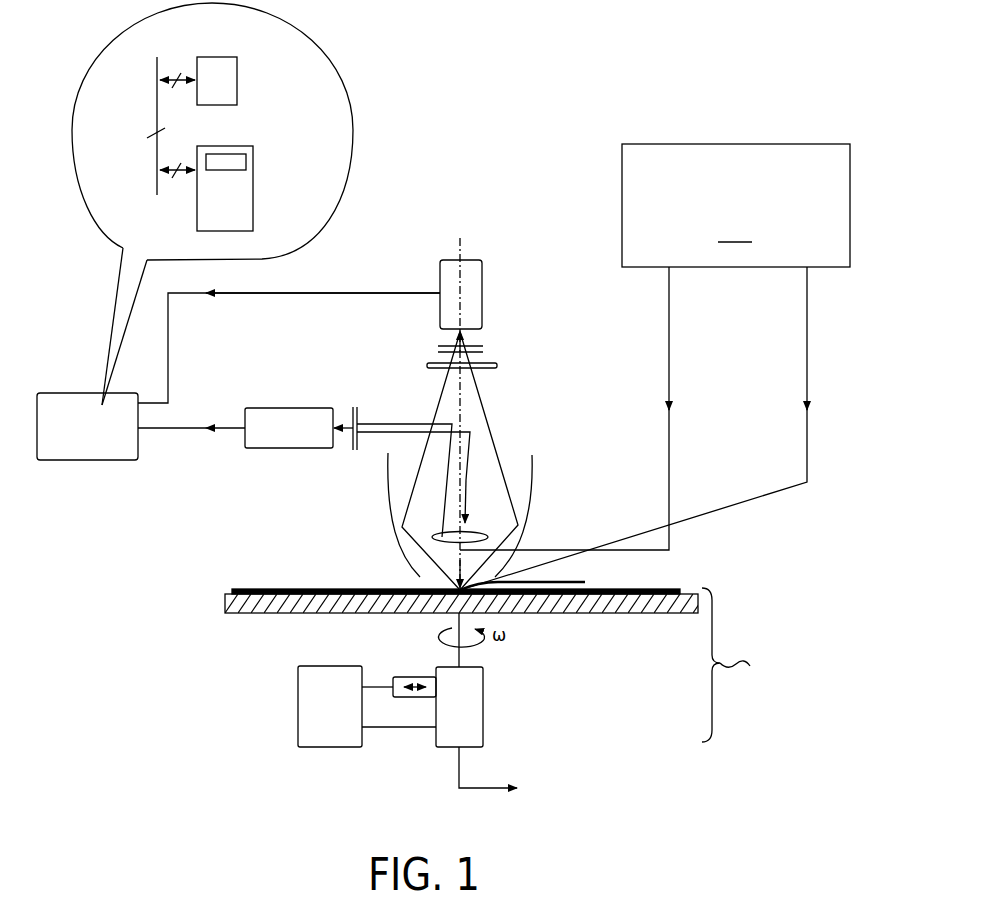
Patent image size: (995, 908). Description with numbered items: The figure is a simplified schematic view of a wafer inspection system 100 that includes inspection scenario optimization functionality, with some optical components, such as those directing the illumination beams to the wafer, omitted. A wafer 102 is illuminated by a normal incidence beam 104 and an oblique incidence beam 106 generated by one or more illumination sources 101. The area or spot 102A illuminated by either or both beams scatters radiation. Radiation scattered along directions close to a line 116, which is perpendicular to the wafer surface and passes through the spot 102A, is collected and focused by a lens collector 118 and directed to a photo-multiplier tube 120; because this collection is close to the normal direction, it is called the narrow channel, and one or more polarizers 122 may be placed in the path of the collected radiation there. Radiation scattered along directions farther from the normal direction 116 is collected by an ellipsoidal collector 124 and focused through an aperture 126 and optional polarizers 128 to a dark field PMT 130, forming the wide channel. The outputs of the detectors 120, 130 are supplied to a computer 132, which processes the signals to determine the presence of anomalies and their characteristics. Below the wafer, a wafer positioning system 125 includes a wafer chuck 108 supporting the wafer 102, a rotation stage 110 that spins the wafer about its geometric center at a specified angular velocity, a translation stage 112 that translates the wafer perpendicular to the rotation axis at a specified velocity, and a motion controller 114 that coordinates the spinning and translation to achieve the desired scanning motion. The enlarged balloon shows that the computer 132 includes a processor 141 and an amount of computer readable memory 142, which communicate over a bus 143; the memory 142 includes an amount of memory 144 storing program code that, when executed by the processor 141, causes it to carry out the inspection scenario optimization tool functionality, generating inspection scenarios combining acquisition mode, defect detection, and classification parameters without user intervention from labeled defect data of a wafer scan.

The wafer inspection system 100 is at (90, 271).
The illumination source 101 is at (736, 205).
The wafer 102 is at (345, 588).
The illuminated spot 102A is at (548, 575).
The normal incidence beam 104 is at (670, 303).
The oblique incidence beam 106 is at (808, 305).
The wafer chuck 108 is at (570, 614).
The rotation stage 110 is at (488, 712).
The translation stage 112 is at (415, 677).
The motion controller 114 is at (333, 665).
The normal direction line 116 is at (462, 240).
The lens collector 118 is at (473, 533).
The photo-multiplier tube 120 is at (275, 408).
The polarizer 122 is at (352, 450).
The ellipsoidal collector 124 is at (532, 472).
The wafer positioning system 125 is at (779, 665).
The aperture 126 is at (498, 366).
The polarizer 128 is at (484, 347).
The dark field PMT 130 is at (483, 300).
The computer 132 is at (92, 393).
The processor 141 is at (238, 78).
The computer readable memory 142 is at (197, 213).
The bus 143 is at (157, 105).
The memory storing program code 144 is at (247, 162).